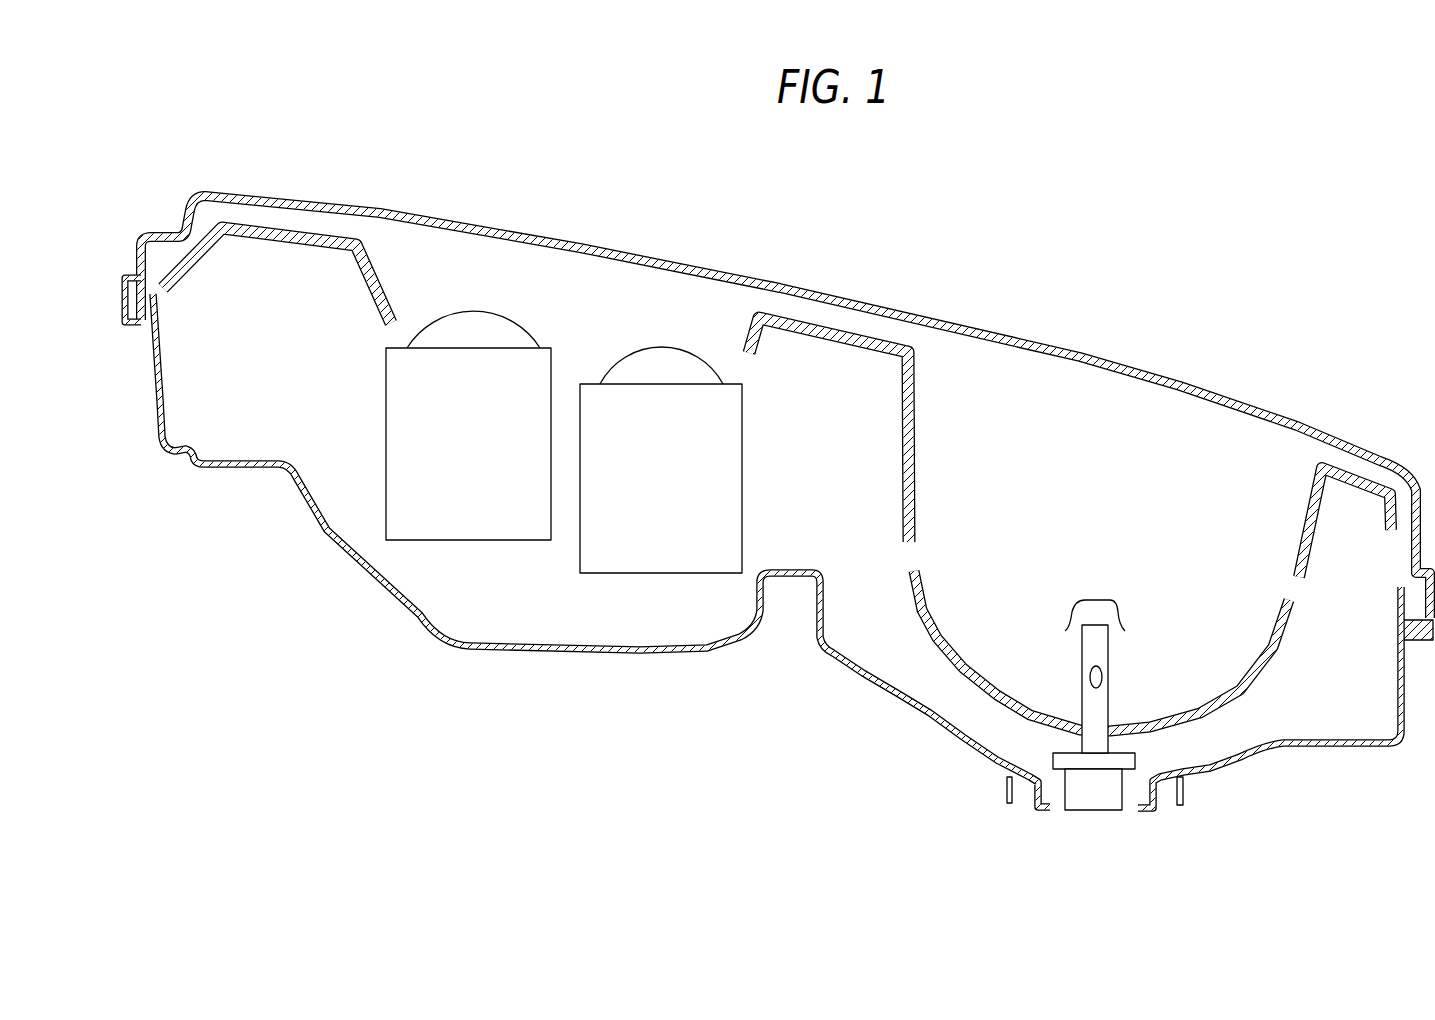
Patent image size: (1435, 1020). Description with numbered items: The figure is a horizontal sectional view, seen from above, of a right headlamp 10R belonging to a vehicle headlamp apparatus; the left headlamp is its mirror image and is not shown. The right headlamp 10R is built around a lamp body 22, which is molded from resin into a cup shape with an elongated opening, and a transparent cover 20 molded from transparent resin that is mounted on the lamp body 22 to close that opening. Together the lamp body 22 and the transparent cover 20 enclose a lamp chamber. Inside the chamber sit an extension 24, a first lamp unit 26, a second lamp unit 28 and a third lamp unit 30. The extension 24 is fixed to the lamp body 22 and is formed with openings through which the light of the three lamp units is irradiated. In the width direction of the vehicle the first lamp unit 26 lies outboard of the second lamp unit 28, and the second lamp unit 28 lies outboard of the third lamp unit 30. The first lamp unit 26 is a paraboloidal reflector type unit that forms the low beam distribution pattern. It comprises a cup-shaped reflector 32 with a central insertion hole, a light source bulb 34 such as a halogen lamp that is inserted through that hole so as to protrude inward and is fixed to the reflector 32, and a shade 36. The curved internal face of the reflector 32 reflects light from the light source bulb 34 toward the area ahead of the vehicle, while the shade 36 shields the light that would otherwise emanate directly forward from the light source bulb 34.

The right headlamp 10R is at (1150, 245).
The transparent cover 20 is at (1297, 422).
The lamp body 22 is at (1335, 748).
The extension 24 is at (1357, 478).
The first lamp unit 26 is at (950, 707).
The second lamp unit 28 is at (602, 597).
The third lamp unit 30 is at (413, 563).
The reflector 32 is at (1273, 650).
The light source bulb 34 is at (1110, 678).
The shade 36 is at (1130, 627).